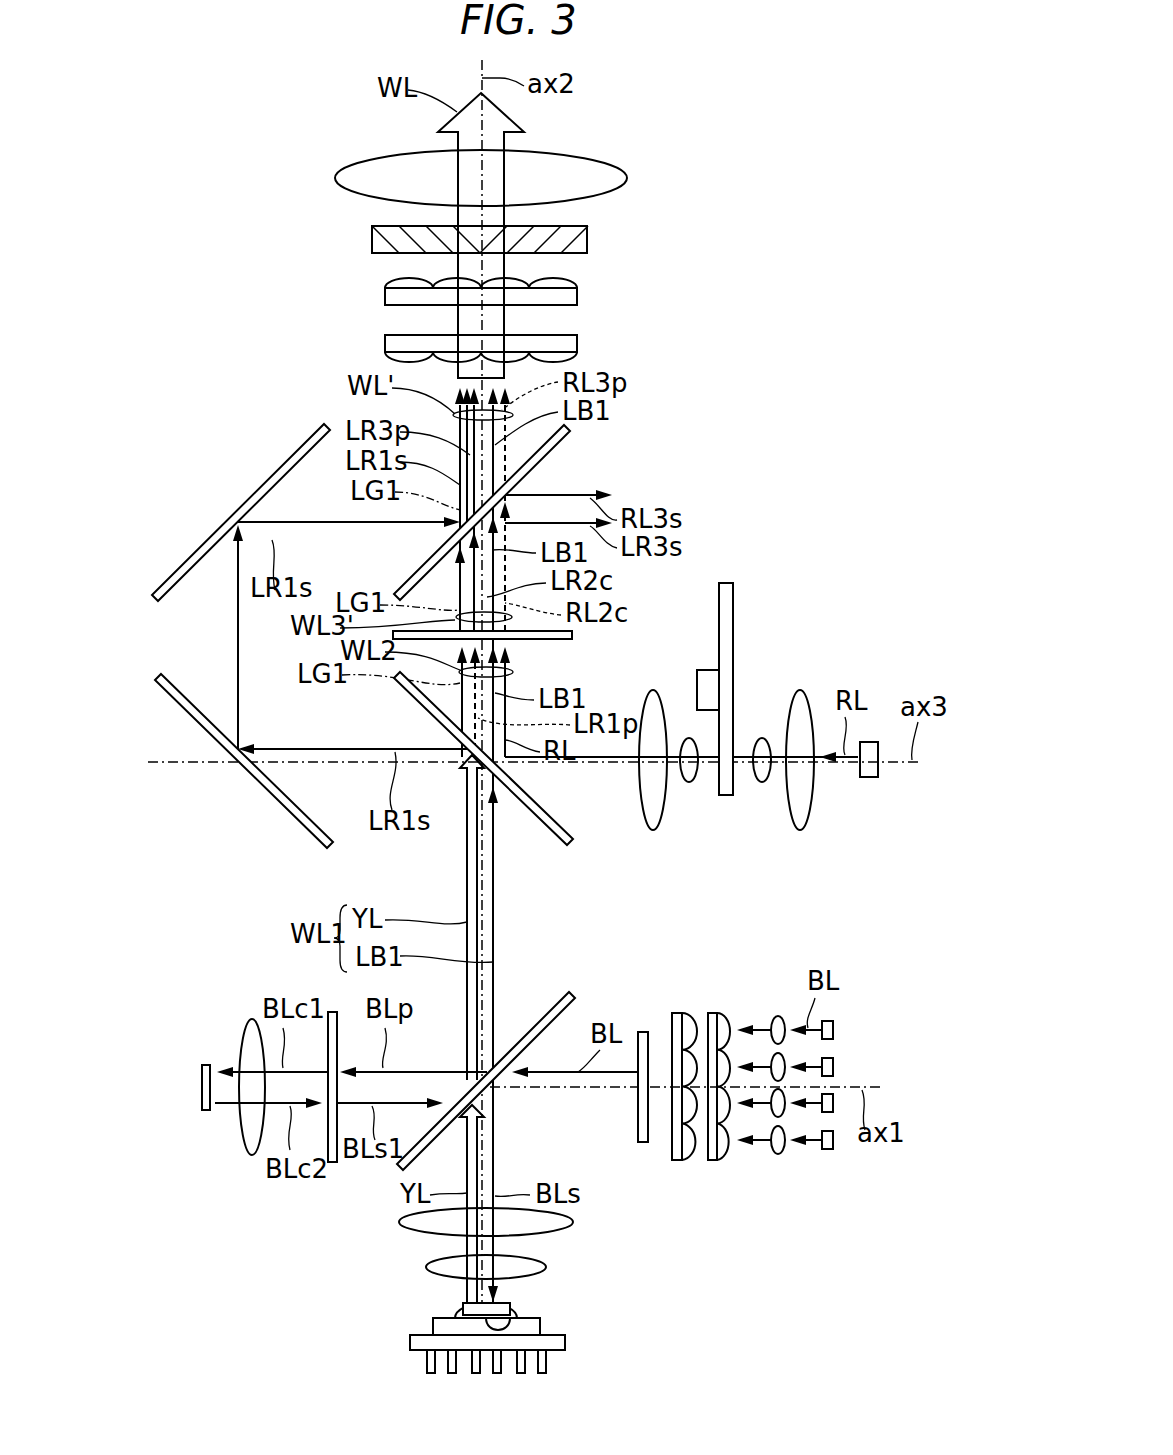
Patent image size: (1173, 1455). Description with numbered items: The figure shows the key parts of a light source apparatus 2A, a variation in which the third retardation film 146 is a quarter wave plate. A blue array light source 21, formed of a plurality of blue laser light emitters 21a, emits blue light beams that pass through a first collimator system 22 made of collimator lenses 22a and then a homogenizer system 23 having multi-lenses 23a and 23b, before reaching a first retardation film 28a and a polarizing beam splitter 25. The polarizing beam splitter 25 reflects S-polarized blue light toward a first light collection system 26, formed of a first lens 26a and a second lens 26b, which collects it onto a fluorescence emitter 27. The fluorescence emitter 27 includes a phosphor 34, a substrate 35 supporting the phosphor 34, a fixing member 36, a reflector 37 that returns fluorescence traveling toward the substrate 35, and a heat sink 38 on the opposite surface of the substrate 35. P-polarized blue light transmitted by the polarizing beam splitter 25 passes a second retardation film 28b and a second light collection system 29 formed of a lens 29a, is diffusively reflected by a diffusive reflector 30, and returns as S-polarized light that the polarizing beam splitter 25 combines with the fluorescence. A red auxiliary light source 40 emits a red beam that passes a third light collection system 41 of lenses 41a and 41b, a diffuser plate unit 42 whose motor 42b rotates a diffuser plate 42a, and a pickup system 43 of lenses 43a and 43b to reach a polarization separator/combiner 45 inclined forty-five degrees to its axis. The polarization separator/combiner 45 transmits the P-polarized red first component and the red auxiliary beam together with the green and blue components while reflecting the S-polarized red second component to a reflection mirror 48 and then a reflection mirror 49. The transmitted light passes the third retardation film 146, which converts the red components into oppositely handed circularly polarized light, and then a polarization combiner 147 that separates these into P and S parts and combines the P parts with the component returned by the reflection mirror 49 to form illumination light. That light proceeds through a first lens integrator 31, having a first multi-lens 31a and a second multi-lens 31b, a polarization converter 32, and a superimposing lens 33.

The light source apparatus 2A is at (805, 185).
The blue array light source 21 is at (874, 1051).
The blue laser light emitter 21a is at (834, 1030).
The first collimator system 22 is at (787, 1089).
The collimator lens 22a is at (778, 1154).
The homogenizer system 23 is at (714, 1048).
The multi-lens 23a is at (735, 1065).
The multi-lens 23b is at (696, 1030).
The polarizing beam splitter 25 is at (402, 1163).
The first light collection system 26 is at (568, 1259).
The first lens 26a is at (573, 1222).
The second lens 26b is at (546, 1267).
The fluorescence emitter 27 is at (509, 1330).
The first retardation film 28a is at (643, 1032).
The second retardation film 28b is at (333, 1163).
The second light collection system 29 is at (218, 1127).
The lens 29a is at (248, 1158).
The diffusive reflector 30 is at (208, 1064).
The first lens integrator 31 is at (561, 310).
The first multi-lens 31a is at (577, 343).
The second multi-lens 31b is at (577, 296).
The polarization converter 32 is at (588, 243).
The superimposing lens 33 is at (598, 160).
The phosphor 34 is at (462, 1308).
The substrate 35 is at (433, 1327).
The fixing member 36 is at (513, 1308).
The reflector 37 is at (513, 1331).
The heat sink 38 is at (412, 1344).
The red auxiliary light source 40 is at (868, 782).
The third light collection system 41 is at (795, 813).
The lens 41a is at (765, 782).
The lens 41b is at (806, 830).
The diffuser plate unit 42 is at (756, 667).
The diffuser plate 42a is at (727, 670).
The motor 42b is at (705, 672).
The pickup system 43 is at (666, 813).
The lens 43a is at (690, 782).
The lens 43b is at (648, 830).
The polarization separator/combiner 45 is at (535, 810).
The reflection mirror 48 is at (198, 718).
The reflection mirror 49 is at (200, 550).
The third retardation film 146 is at (572, 636).
The polarization combiner 147 is at (535, 460).